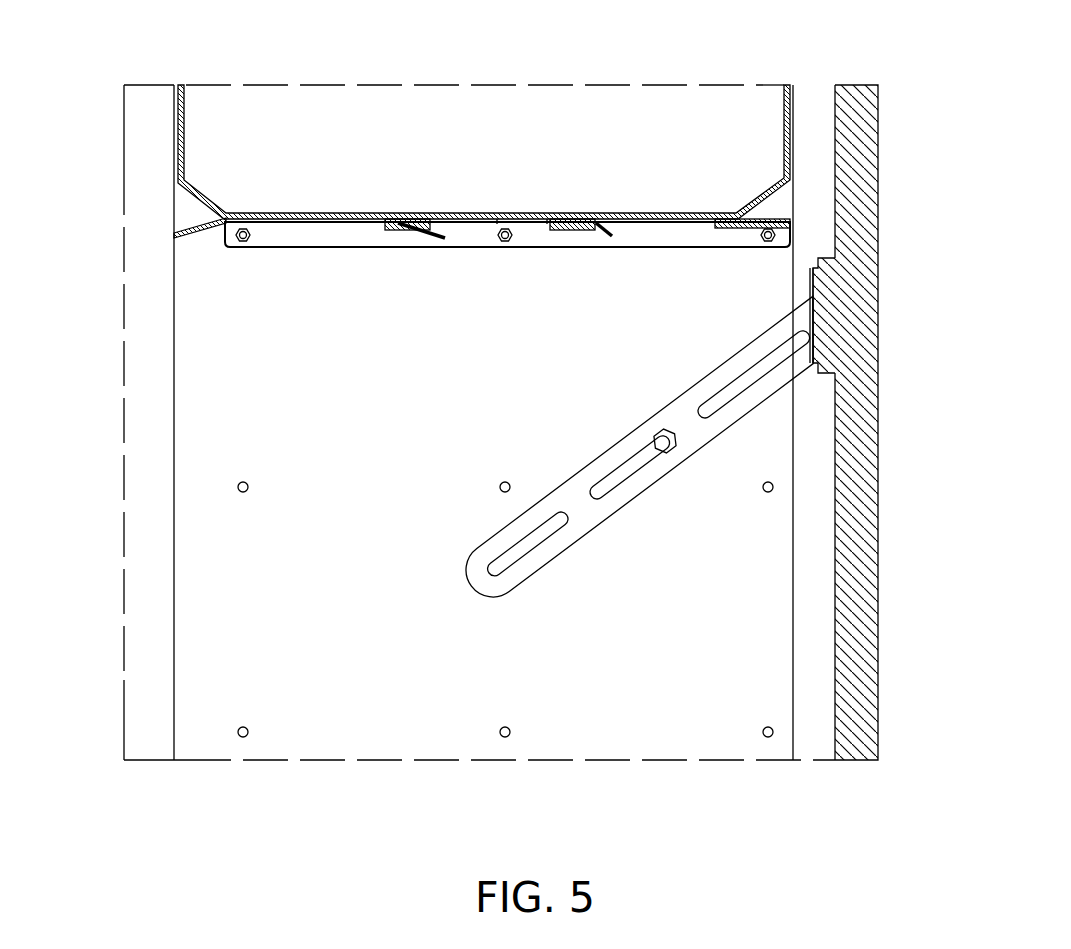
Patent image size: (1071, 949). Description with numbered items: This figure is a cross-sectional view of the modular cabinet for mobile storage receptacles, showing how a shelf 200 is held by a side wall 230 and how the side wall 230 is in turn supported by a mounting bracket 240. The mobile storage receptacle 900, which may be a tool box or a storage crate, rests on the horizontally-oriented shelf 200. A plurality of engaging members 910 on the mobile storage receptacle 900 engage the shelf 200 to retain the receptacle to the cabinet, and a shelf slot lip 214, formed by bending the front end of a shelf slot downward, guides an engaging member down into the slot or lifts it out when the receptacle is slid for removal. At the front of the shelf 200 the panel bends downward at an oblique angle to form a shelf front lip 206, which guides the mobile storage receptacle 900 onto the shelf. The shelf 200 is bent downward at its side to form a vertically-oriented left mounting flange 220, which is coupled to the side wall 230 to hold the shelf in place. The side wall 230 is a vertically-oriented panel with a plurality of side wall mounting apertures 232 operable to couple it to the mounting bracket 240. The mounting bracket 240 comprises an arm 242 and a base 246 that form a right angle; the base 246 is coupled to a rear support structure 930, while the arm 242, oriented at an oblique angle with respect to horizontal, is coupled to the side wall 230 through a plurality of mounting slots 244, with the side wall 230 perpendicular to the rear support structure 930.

The mobile storage receptacle 900 is at (183, 131).
The shelf 200 is at (740, 216).
The shelf front lip 206 is at (200, 238).
The left mounting flange 220 is at (321, 249).
The engaging members 910 is at (410, 232).
The shelf slot lip 214 is at (596, 225).
The rear support structure 930 is at (852, 283).
The base 246 is at (812, 316).
The mounting bracket 240 is at (704, 473).
The arm 242 is at (763, 393).
The mounting slots 244 is at (528, 543).
The side wall 230 is at (215, 598).
The side wall mounting apertures 232 is at (244, 737).